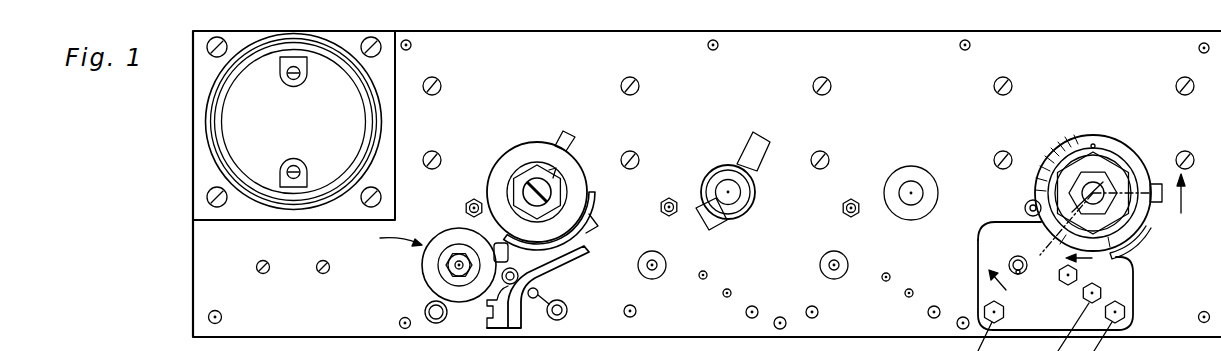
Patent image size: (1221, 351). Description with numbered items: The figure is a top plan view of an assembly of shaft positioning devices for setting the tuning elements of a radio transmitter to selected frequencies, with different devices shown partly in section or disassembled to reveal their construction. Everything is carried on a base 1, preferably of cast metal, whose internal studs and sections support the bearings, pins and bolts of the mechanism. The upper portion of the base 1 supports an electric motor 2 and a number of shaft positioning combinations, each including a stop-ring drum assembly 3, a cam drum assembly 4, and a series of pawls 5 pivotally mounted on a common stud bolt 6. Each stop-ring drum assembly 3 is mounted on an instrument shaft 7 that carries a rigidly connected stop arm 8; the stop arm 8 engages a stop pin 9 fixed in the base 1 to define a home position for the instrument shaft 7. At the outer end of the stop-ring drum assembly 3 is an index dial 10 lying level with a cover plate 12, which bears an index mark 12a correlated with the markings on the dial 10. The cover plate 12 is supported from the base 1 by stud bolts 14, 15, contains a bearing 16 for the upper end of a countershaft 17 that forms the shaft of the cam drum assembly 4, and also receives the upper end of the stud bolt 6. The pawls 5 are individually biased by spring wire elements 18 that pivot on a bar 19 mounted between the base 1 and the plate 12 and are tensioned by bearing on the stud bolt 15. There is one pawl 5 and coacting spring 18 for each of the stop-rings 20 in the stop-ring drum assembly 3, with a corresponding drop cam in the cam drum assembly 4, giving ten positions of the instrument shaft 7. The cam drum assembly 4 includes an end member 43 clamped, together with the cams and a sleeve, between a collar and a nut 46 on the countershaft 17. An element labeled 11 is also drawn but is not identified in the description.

The base 1 is at (550, 45).
The electric motor 2 is at (230, 125).
The stop-ring drum assembly 3 is at (508, 146).
The cam drum assembly 4 is at (1196, 193).
The pawl 5 is at (594, 229).
The stud bolt 6 is at (540, 279).
The instrument shaft 7 is at (733, 197).
The stop arm 8 is at (568, 134).
The stop pin 9 is at (473, 200).
The index dial 10 is at (1120, 149).
The hub bushing 11 is at (457, 256).
The cover plate 12 is at (1126, 289).
The index mark 12a is at (1091, 266).
The stud bolt 14 is at (426, 310).
The stud bolt 15 is at (568, 312).
The bearing 16 is at (1017, 257).
The countershaft 17 is at (1021, 273).
The spring wire element 18 is at (566, 263).
The bar 19 is at (533, 299).
The stop-ring 20 is at (577, 197).
The end member 43 is at (428, 262).
The nut 46 is at (466, 272).